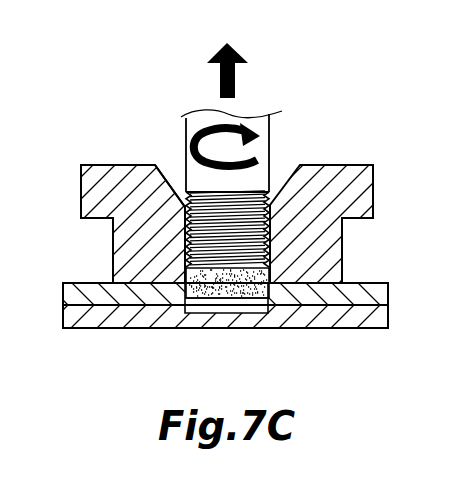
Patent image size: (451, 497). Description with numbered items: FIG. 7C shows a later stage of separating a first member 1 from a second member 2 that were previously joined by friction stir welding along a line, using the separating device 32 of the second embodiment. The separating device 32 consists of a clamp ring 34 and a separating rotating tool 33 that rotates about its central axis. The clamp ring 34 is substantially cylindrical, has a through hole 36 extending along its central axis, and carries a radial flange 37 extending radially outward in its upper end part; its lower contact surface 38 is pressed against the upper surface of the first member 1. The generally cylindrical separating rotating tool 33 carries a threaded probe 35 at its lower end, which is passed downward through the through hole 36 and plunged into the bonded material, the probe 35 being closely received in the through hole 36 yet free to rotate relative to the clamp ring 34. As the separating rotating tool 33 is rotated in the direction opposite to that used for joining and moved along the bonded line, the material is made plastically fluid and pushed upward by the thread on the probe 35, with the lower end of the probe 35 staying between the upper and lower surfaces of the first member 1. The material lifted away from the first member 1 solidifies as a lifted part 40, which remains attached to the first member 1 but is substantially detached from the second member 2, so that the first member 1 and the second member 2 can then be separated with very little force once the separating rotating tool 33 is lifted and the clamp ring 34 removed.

The first member 1 is at (68, 295).
The second member 2 is at (72, 317).
The separating device 32 is at (116, 110).
The separating rotating tool 33 is at (263, 107).
The clamp ring 34 is at (349, 158).
The probe 35 is at (240, 210).
The through hole 36 is at (184, 203).
The radial flange 37 is at (362, 188).
The contact surface 38 is at (348, 292).
The lifted part 40 is at (230, 288).